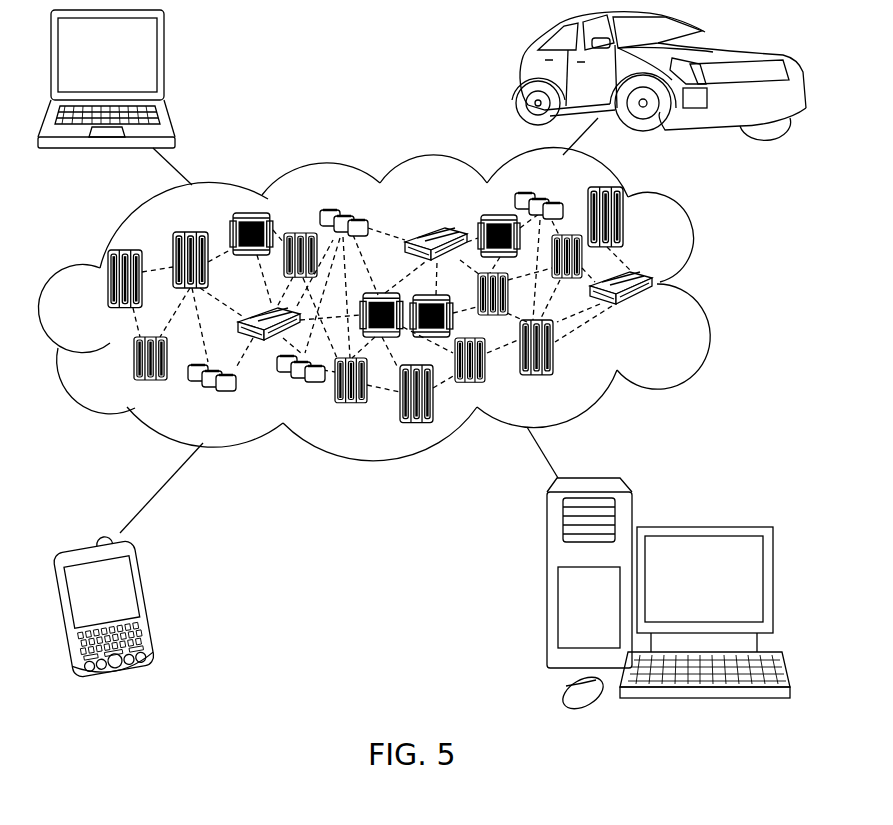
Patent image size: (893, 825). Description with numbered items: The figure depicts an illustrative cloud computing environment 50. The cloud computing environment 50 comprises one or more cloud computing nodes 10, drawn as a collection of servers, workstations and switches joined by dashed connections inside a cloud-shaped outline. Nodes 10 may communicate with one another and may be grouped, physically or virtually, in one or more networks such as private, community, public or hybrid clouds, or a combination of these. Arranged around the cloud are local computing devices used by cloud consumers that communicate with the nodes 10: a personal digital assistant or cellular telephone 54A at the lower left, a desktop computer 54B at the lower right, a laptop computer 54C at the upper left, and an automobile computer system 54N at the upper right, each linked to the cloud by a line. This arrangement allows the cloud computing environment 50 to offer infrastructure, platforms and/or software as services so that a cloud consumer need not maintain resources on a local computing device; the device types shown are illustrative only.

The cloud computing environment 50 is at (703, 284).
The cloud computing nodes 10 is at (421, 305).
The personal digital assistant (PDA) or cellular telephone 54A is at (158, 603).
The desktop computer 54B is at (702, 527).
The laptop computer 54C is at (165, 63).
The automobile computer system 54N is at (520, 74).